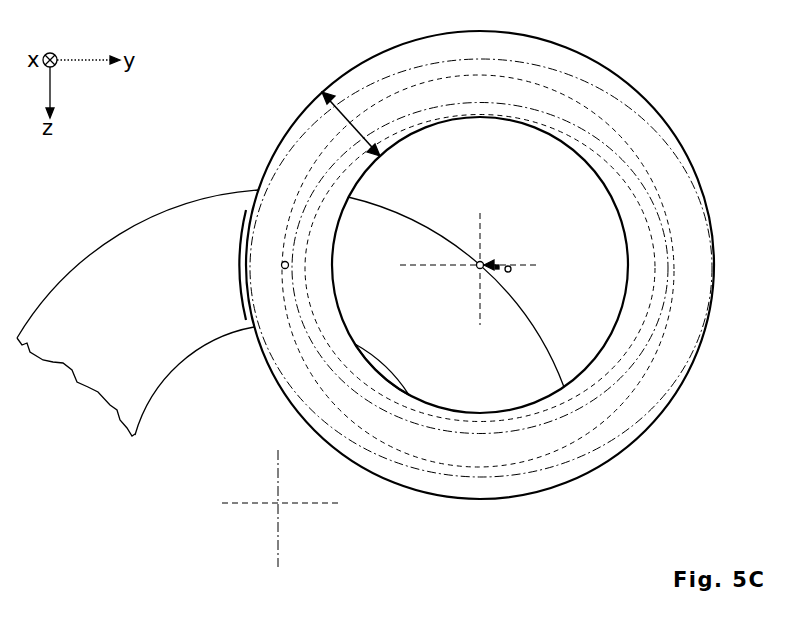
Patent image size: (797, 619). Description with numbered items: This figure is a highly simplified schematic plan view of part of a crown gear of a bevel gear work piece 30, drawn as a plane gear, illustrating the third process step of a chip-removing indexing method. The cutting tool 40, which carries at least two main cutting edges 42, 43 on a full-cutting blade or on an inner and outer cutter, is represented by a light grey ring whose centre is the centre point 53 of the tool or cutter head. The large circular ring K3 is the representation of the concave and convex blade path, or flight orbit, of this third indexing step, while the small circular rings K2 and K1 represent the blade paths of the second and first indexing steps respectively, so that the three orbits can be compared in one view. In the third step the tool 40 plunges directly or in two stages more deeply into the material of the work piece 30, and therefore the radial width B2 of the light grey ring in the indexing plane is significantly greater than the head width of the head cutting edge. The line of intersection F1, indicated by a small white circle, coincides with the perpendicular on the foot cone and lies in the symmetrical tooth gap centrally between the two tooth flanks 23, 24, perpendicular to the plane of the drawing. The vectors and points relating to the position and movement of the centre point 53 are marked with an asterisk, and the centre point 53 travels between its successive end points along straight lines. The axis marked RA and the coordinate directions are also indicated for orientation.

The bevel gear work piece 30 is at (93, 377).
The convex tooth flank 23 is at (330, 290).
The tooth flank 24 is at (243, 242).
The cutting tool 40 is at (460, 302).
The main cutting edge 42 is at (530, 493).
The main cutting edge 43 is at (595, 360).
The centre point of the tool/cutter head 53 is at (483, 263).
The small circular ring K1 is at (403, 468).
The small circular ring K2 is at (583, 462).
The large circular ring K3 is at (625, 450).
The line of intersection F1 is at (282, 268).
The width of the ring B2 is at (353, 112).
The rotation axis RA is at (282, 504).